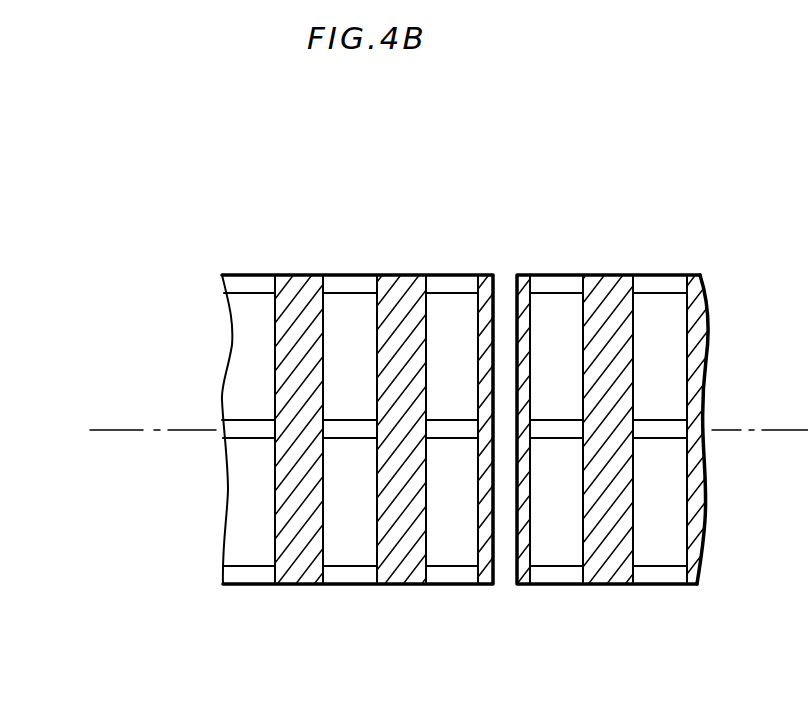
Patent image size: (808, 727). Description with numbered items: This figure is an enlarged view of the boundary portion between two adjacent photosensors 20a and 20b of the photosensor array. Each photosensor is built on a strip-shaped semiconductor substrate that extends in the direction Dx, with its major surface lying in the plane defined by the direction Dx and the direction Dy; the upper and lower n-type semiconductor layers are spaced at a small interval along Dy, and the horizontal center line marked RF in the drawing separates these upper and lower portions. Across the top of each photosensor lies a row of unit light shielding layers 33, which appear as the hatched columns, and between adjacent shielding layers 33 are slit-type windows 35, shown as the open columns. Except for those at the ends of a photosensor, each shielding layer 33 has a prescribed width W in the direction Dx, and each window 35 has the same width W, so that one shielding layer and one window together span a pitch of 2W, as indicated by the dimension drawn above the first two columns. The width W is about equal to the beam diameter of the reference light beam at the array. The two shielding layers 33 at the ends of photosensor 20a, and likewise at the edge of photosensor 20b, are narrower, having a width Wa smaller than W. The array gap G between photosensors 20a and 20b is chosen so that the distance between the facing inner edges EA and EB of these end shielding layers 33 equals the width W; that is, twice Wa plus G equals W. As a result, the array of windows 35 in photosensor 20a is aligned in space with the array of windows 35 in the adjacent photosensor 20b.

The photosensor 20a is at (375, 587).
The photosensor 20b is at (558, 592).
The unit light shielding layer 33 is at (282, 382).
The slit-type window 35 is at (335, 333).
The inner edge EA is at (477, 313).
The inner edge EB is at (531, 315).
The reference plane RF is at (716, 430).
The array gap G is at (487, 590).
The width W is at (533, 235).
The double width 2W is at (378, 173).
The width Wa is at (508, 368).
The direction Dx is at (141, 643).
The direction Dy is at (141, 643).